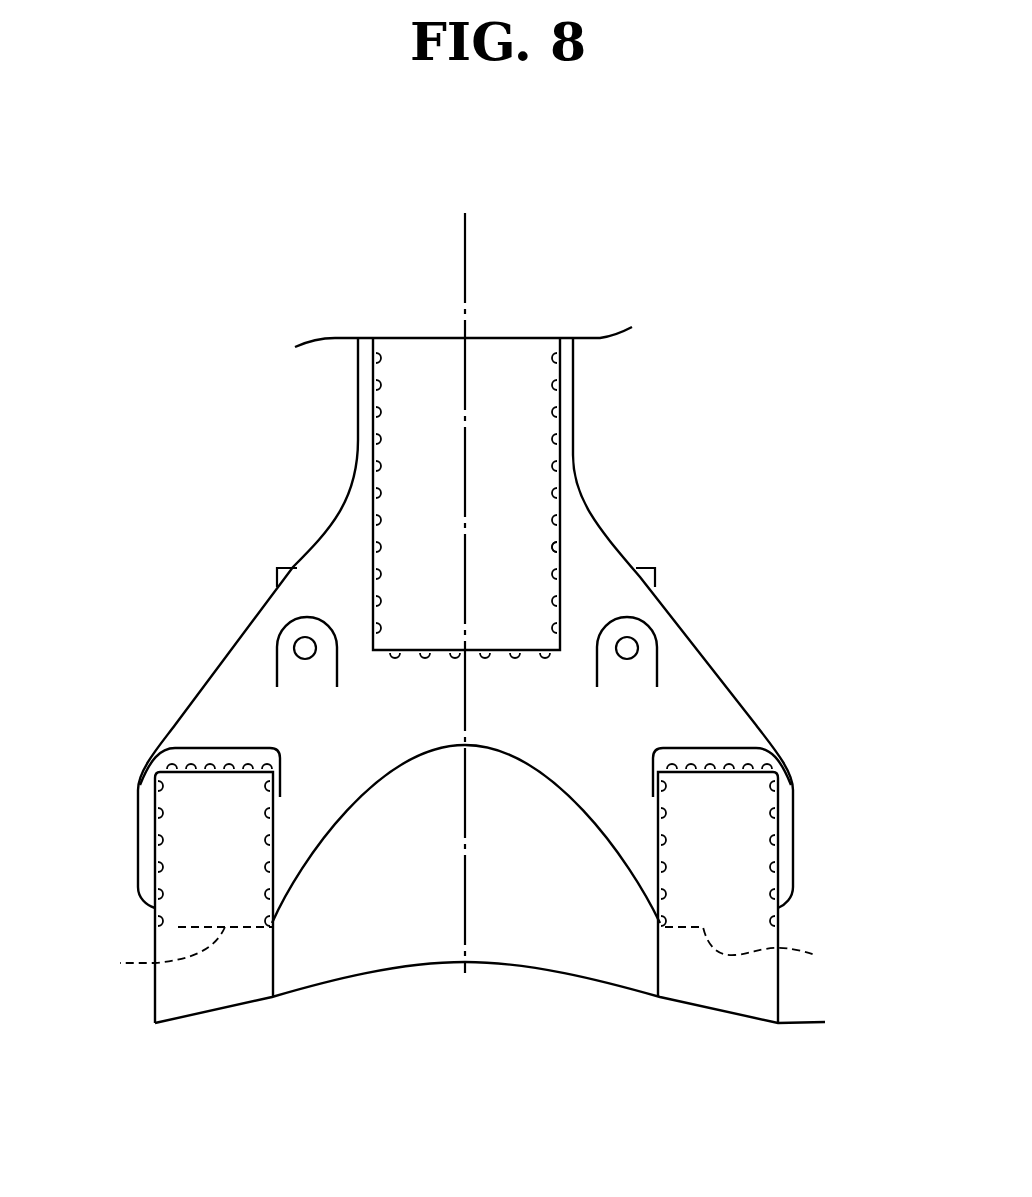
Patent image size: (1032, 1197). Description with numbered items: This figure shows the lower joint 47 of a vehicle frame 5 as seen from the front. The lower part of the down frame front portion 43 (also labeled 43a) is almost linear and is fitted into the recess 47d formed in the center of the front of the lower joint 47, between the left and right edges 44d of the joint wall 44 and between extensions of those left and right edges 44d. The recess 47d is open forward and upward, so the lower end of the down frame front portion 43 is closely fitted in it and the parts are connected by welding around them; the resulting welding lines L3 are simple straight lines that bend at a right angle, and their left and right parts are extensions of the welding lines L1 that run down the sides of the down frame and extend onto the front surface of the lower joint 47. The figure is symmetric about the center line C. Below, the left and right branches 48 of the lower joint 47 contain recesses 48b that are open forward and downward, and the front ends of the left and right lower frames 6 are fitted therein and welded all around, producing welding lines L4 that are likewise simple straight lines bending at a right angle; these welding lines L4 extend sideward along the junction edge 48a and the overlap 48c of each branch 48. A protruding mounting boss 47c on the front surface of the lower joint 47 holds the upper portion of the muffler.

The garment (shorts body) 5 is at (272, 472).
The lower frame 6 is at (708, 998).
The down frame front portion 43 is at (443, 363).
The front panel region 43a is at (466, 297).
The stitched attachment rectangle 44 is at (577, 428).
The left and right edges 44d is at (573, 367).
The lower joint 47 is at (482, 740).
The mounting boss 47c is at (645, 640).
The recess 47d is at (550, 540).
The branch 48 is at (698, 715).
The junction edge 48a is at (792, 842).
The recess 48b is at (660, 885).
The overlap 48c is at (466, 953).
The center line C is at (467, 571).
The welding line L1 is at (545, 338).
The welding line L3 is at (557, 490).
The welding line L4 is at (778, 812).